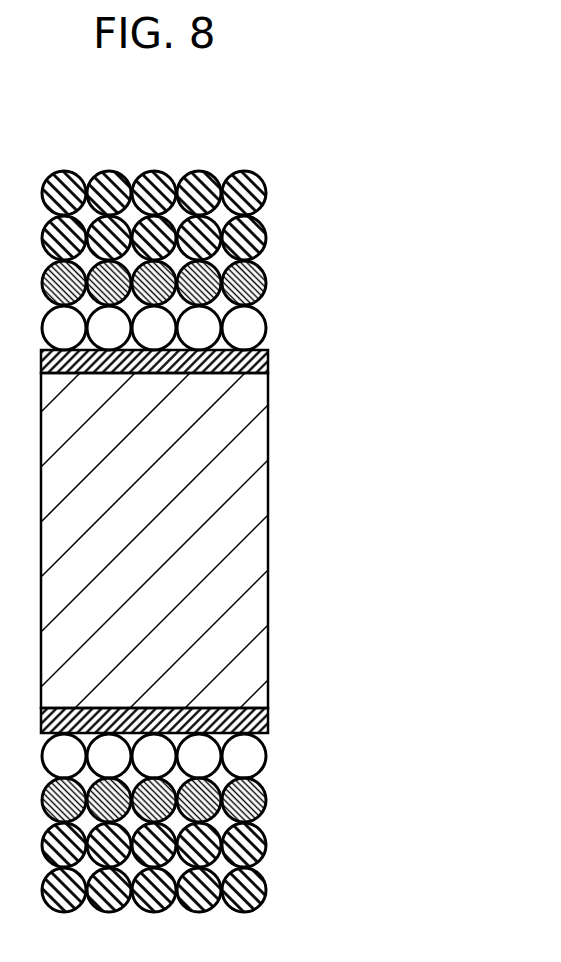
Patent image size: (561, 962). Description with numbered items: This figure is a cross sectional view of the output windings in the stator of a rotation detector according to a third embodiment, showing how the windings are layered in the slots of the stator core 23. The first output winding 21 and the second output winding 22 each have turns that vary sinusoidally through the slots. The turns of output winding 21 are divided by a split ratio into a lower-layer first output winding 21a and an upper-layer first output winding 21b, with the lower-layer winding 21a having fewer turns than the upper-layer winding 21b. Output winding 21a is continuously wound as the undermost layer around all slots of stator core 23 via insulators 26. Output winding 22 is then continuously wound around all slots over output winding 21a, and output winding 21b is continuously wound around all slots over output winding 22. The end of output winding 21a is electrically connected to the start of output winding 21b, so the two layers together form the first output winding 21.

The output winding 21 is at (427, 213).
The lower-layer first output winding 21a is at (278, 333).
The upper-layer first output winding 21b is at (302, 167).
The output winding 22 is at (278, 285).
The stator core 23 is at (278, 543).
The insulators 26 is at (278, 363).